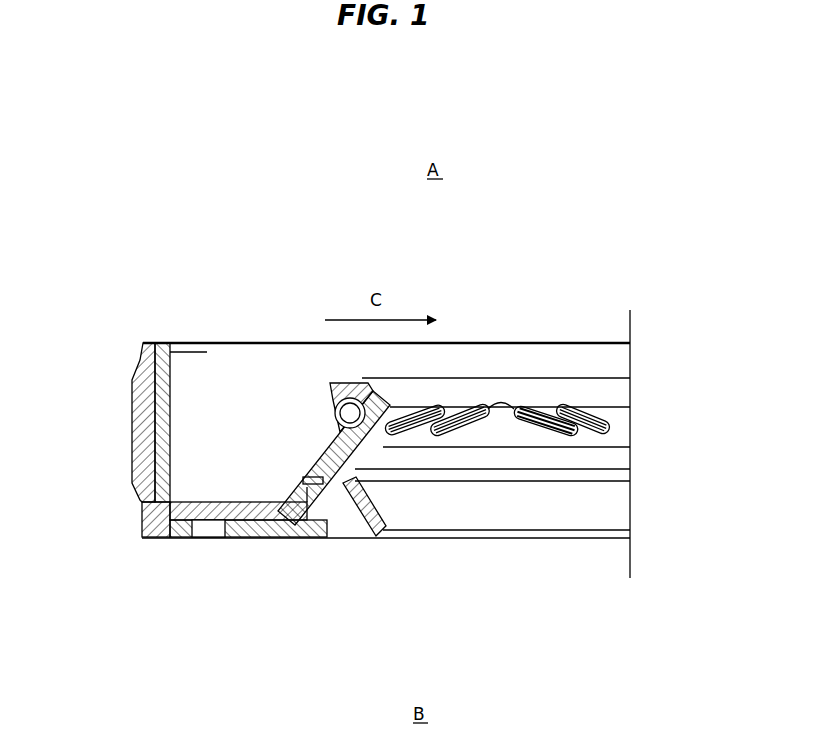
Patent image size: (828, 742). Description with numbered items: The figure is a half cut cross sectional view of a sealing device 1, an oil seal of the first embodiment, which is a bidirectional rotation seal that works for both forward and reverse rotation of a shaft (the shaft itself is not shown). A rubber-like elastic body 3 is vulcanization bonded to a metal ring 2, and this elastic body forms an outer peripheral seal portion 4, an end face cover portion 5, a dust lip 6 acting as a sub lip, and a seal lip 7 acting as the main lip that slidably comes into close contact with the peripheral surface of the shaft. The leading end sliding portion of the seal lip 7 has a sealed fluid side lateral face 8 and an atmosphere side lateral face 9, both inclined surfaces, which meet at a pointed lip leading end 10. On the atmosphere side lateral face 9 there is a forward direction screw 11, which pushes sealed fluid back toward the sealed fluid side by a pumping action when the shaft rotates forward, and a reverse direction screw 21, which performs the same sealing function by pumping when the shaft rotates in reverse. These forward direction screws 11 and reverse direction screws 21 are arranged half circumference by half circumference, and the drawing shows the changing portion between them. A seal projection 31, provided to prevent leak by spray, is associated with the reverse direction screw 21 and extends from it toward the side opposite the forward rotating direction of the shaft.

The sealing device 1 is at (170, 324).
The metal ring 2 is at (142, 503).
The rubber-like elastic body 3 is at (160, 537).
The outer peripheral seal portion 4 is at (140, 428).
The end face cover portion 5 is at (265, 538).
The dust lip 6 is at (334, 483).
The seal lip 7 is at (350, 383).
The sealed fluid side lateral face 8 is at (375, 389).
The atmosphere side lateral face 9 is at (385, 443).
The lip leading end 10 is at (505, 407).
The forward direction screw 11 is at (455, 430).
The reverse direction screw 21 is at (580, 430).
The seal projection 31 is at (545, 423).